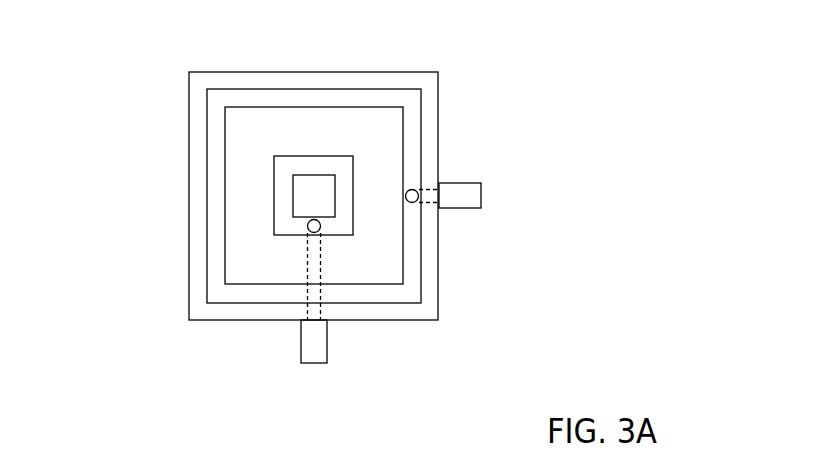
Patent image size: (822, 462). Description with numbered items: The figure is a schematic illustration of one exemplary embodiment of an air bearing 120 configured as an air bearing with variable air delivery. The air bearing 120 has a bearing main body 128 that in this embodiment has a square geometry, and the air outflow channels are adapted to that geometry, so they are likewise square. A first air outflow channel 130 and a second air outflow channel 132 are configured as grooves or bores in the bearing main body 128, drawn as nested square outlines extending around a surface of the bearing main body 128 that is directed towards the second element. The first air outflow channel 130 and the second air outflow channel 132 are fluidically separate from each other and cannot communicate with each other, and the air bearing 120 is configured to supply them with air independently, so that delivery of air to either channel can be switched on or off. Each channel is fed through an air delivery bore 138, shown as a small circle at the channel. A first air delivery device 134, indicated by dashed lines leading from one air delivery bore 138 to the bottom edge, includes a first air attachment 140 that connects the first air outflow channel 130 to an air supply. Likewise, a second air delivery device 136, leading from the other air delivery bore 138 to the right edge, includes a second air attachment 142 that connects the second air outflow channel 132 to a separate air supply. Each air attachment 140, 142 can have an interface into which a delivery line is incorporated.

The air bearing 120 is at (166, 59).
The bearing main body 128 is at (180, 194).
The first air outflow channel 130 is at (315, 165).
The second air outflow channel 132 is at (280, 100).
The first air delivery device 134 is at (320, 270).
The second air delivery device 136 is at (423, 190).
The air delivery bore 138 is at (363, 211).
The first air attachment 140 is at (313, 356).
The second air attachment 142 is at (478, 192).